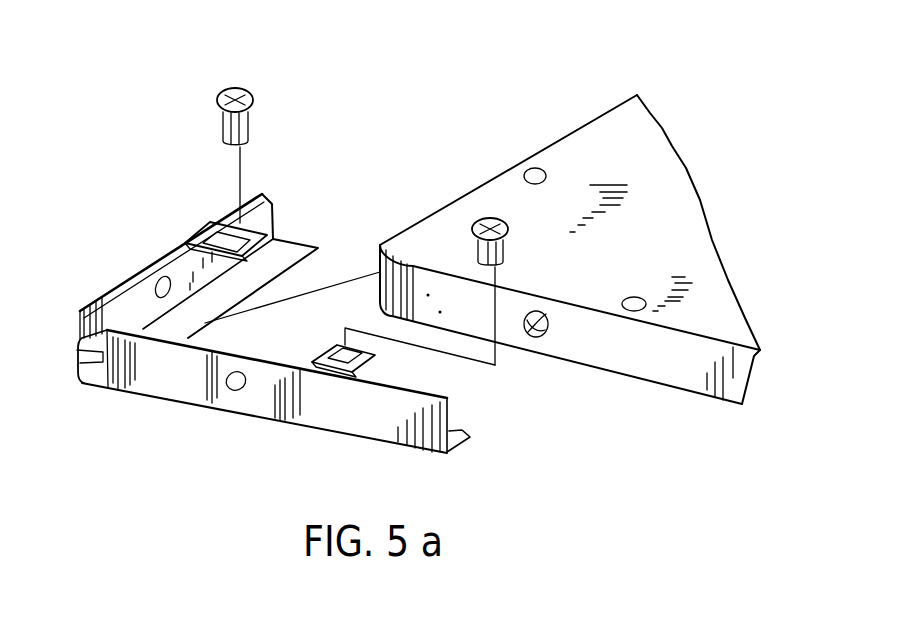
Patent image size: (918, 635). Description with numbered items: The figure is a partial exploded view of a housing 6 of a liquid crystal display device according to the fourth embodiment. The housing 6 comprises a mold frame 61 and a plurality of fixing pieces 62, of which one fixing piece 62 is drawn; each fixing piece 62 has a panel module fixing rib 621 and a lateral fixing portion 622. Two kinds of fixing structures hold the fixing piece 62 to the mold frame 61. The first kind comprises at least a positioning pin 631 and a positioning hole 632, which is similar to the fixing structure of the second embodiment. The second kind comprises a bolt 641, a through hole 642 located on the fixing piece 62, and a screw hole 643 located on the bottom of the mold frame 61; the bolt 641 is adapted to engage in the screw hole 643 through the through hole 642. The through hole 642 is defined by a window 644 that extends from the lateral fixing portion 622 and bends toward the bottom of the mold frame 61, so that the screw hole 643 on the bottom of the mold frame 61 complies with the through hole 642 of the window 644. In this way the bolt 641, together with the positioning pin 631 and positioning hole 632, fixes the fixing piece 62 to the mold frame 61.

The housing 6 is at (341, 84).
The mold frame 61 is at (690, 170).
The fixing piece 62 is at (152, 380).
The panel module fixing rib 621 is at (287, 252).
The lateral fixing portion 622 is at (343, 427).
The positioning pin 631 is at (530, 338).
The positioning hole 632 is at (241, 393).
The bolt 641 is at (235, 87).
The through hole 642 is at (320, 353).
The screw hole 643 is at (534, 168).
The window 644 is at (374, 357).